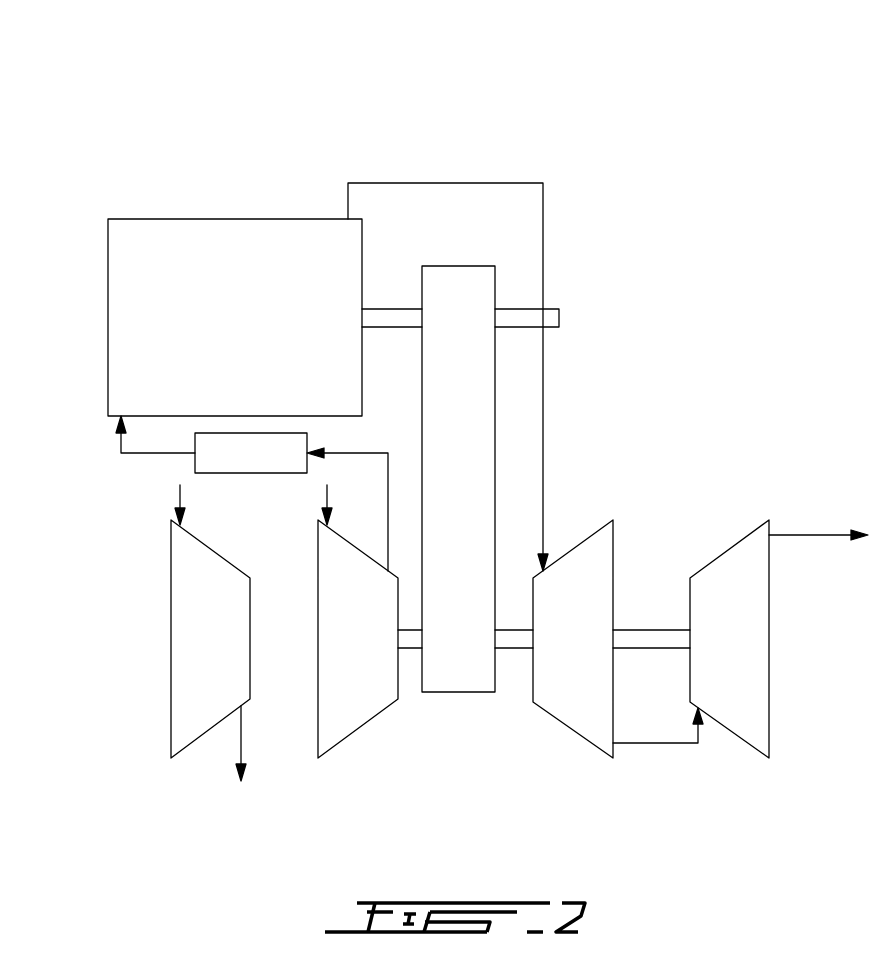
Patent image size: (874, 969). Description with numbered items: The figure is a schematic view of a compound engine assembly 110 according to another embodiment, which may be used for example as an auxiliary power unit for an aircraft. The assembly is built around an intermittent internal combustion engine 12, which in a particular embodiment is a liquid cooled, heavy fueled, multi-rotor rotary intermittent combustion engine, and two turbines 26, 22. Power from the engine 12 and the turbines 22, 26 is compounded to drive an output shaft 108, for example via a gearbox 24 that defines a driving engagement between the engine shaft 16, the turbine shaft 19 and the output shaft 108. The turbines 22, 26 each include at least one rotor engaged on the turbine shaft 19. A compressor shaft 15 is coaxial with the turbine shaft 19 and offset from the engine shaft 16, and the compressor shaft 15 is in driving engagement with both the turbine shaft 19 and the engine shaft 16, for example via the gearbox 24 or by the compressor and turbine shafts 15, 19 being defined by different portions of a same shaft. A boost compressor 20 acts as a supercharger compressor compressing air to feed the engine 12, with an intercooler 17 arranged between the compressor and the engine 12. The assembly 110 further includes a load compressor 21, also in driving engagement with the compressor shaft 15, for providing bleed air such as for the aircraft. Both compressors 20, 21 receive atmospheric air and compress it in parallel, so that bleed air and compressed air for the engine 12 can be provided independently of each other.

The compound engine assembly 110 is at (660, 146).
The intermittent internal combustion engine 12 is at (263, 232).
The engine shaft 16 is at (388, 318).
The gearbox 24 is at (480, 287).
The output shaft 108 is at (556, 321).
The intercooler 17 is at (205, 460).
The load compressor 21 is at (196, 720).
The boost compressor 20 is at (341, 718).
The compressor shaft 15 is at (408, 640).
The turbine shaft 19 is at (518, 640).
The turbine 26 is at (588, 557).
The turbine 22 is at (741, 715).